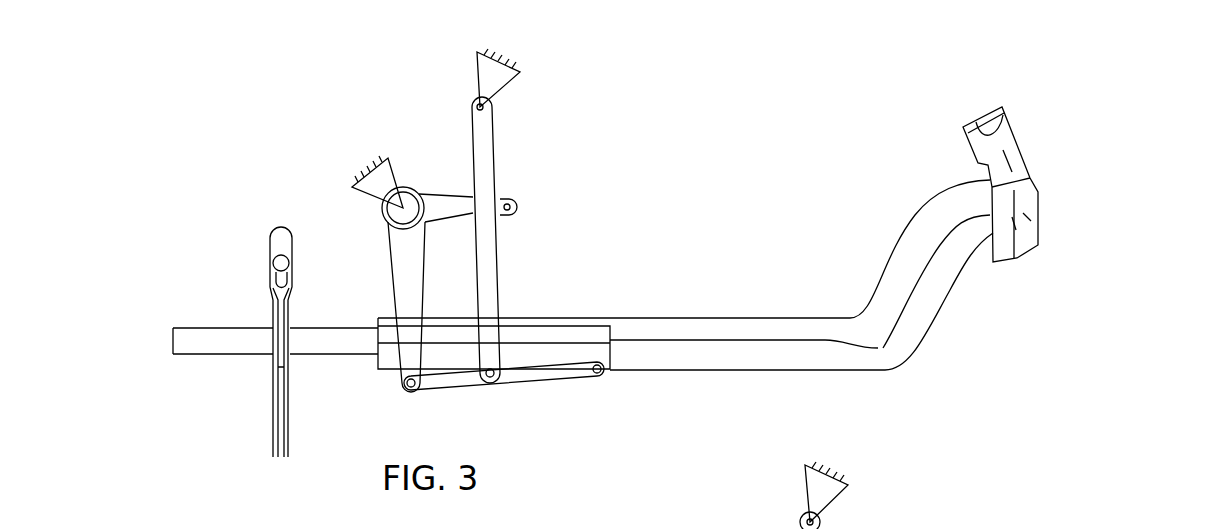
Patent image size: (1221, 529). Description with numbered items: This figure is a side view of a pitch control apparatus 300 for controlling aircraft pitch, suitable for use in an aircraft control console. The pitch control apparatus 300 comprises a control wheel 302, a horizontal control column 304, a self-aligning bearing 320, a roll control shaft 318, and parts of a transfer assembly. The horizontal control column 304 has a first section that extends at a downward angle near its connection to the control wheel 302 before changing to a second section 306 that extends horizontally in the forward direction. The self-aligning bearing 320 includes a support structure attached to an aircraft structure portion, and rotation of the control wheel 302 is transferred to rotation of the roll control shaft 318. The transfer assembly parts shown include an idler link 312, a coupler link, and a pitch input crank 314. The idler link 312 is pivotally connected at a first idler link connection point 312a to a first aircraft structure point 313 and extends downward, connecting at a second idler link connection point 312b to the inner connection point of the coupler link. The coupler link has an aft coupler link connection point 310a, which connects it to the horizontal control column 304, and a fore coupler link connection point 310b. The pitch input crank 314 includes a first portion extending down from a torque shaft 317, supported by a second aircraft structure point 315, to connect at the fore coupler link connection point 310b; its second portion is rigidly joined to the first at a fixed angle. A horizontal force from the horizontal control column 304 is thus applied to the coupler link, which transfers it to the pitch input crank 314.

The pitch control apparatus 300 is at (1058, 112).
The control wheel 302 is at (1025, 215).
The horizontal control column 304 is at (962, 307).
The second section of horizontal control column 306 is at (863, 360).
The aft coupler link connection point 310a is at (600, 378).
The fore coupler link connection point 310b is at (405, 392).
The idler link 312 is at (488, 218).
The first idler link connection point 312a is at (481, 112).
The second idler link connection point 312b is at (488, 383).
The first aircraft structure point 313 is at (485, 80).
The pitch input crank 314 is at (403, 285).
The second aircraft structure point 315 is at (370, 170).
The torque shaft 317 is at (397, 212).
The roll control shaft 318 is at (257, 338).
The self-aligning bearing 320 is at (273, 293).